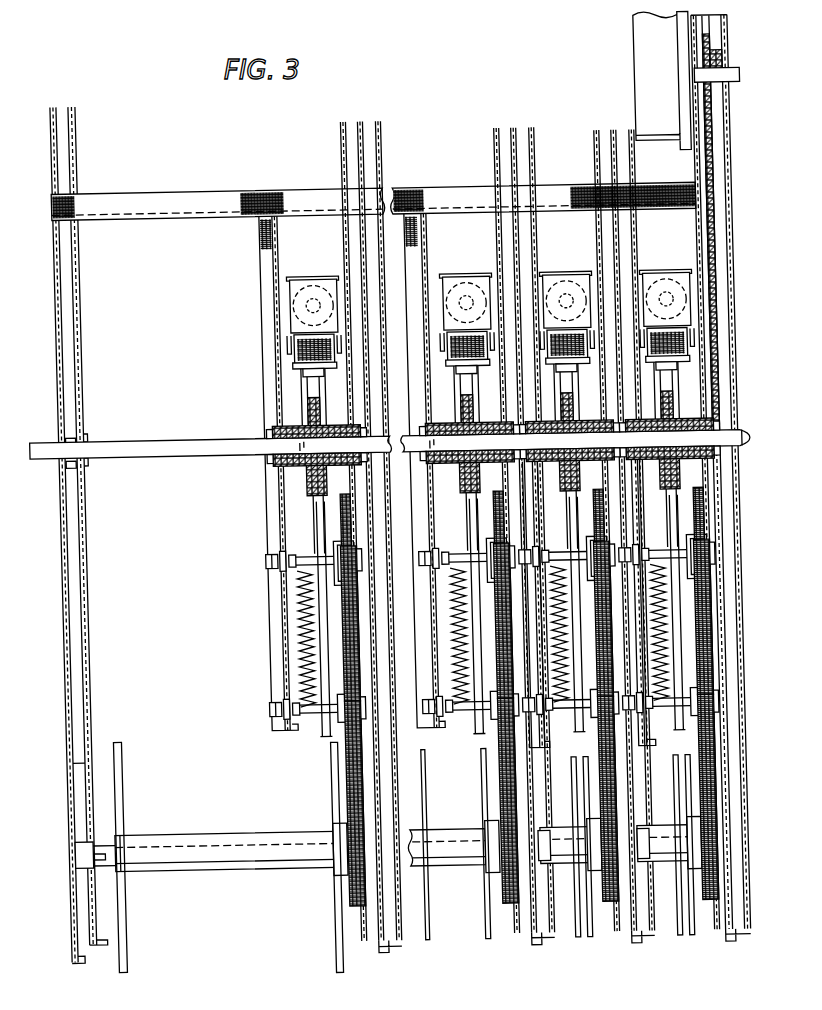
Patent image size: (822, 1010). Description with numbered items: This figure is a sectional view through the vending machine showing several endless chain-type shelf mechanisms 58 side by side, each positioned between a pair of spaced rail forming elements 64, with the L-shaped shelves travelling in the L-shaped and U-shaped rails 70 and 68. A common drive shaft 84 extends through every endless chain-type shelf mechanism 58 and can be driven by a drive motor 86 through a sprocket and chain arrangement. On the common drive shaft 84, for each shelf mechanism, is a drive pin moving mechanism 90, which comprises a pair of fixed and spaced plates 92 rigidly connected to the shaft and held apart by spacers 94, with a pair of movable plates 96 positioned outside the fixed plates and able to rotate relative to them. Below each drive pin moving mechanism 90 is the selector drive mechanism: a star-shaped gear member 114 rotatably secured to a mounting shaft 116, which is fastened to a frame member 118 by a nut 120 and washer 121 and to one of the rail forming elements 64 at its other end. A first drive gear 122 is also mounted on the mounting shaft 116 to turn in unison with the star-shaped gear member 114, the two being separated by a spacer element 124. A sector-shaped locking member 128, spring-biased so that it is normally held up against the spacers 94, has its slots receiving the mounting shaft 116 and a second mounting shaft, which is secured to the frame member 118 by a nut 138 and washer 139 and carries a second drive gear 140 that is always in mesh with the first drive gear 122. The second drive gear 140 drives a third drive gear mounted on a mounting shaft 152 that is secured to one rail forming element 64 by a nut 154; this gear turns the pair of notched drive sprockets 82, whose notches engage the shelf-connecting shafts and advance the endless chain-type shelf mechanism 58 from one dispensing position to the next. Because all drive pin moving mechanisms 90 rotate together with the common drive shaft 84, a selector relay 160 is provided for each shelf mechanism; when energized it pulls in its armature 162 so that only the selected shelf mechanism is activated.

The endless chain-type shelf mechanism 58 is at (181, 896).
The spaced rail forming elements 64 is at (82, 347).
The U-shaped rails 68 is at (608, 137).
The L-shaped rails 70 is at (71, 772).
The drive sprockets 82 is at (114, 952).
The common drive shaft 84 is at (188, 440).
The drive motor 86 is at (644, 32).
The drive pin moving mechanism 90 is at (327, 421).
The fixed and spaced plates 92 is at (305, 372).
The spacers 94 is at (308, 410).
The movable plates 96 is at (306, 388).
The star-shaped gear member 114 is at (318, 650).
The mounting shaft 116 is at (263, 564).
The frame member 118 is at (260, 507).
The nut 120 is at (263, 552).
The washer 121 is at (283, 570).
The first drive gear 122 is at (339, 496).
The spacer element 124 is at (331, 573).
The sector-shaped locking member 128 is at (300, 658).
The nut 138 is at (272, 700).
The washer 139 is at (283, 690).
The second drive gear 140 is at (338, 745).
The mounting shaft 152 is at (72, 858).
The nut 154 is at (70, 834).
The selector relay 160 is at (294, 303).
The armature 162 is at (295, 282).